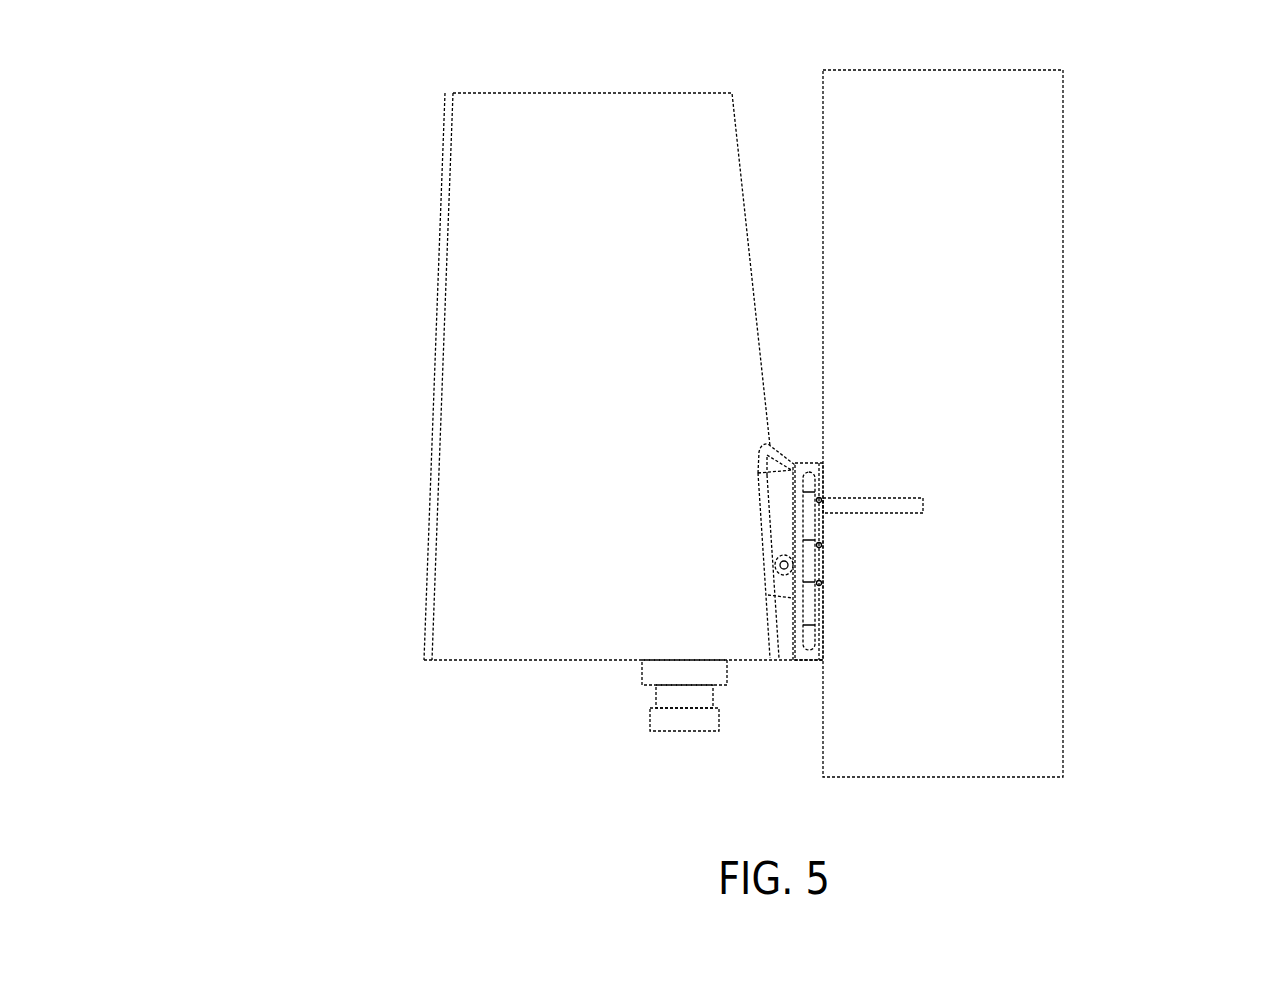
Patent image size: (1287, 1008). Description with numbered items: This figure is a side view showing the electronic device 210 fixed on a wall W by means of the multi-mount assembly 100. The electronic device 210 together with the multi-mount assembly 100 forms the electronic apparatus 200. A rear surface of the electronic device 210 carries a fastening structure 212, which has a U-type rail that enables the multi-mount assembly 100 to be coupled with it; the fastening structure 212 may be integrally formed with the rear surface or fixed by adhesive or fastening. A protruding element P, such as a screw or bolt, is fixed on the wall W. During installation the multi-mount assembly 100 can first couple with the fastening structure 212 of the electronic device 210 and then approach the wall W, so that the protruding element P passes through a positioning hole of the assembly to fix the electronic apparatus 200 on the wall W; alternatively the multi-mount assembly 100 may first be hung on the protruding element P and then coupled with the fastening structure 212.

The electronic apparatus 200 is at (741, 377).
The electronic device 210 is at (460, 358).
The fastening structure 212 is at (798, 449).
The multi-mount assembly 100 is at (823, 603).
The protruding element P is at (923, 505).
The wall W is at (1043, 206).